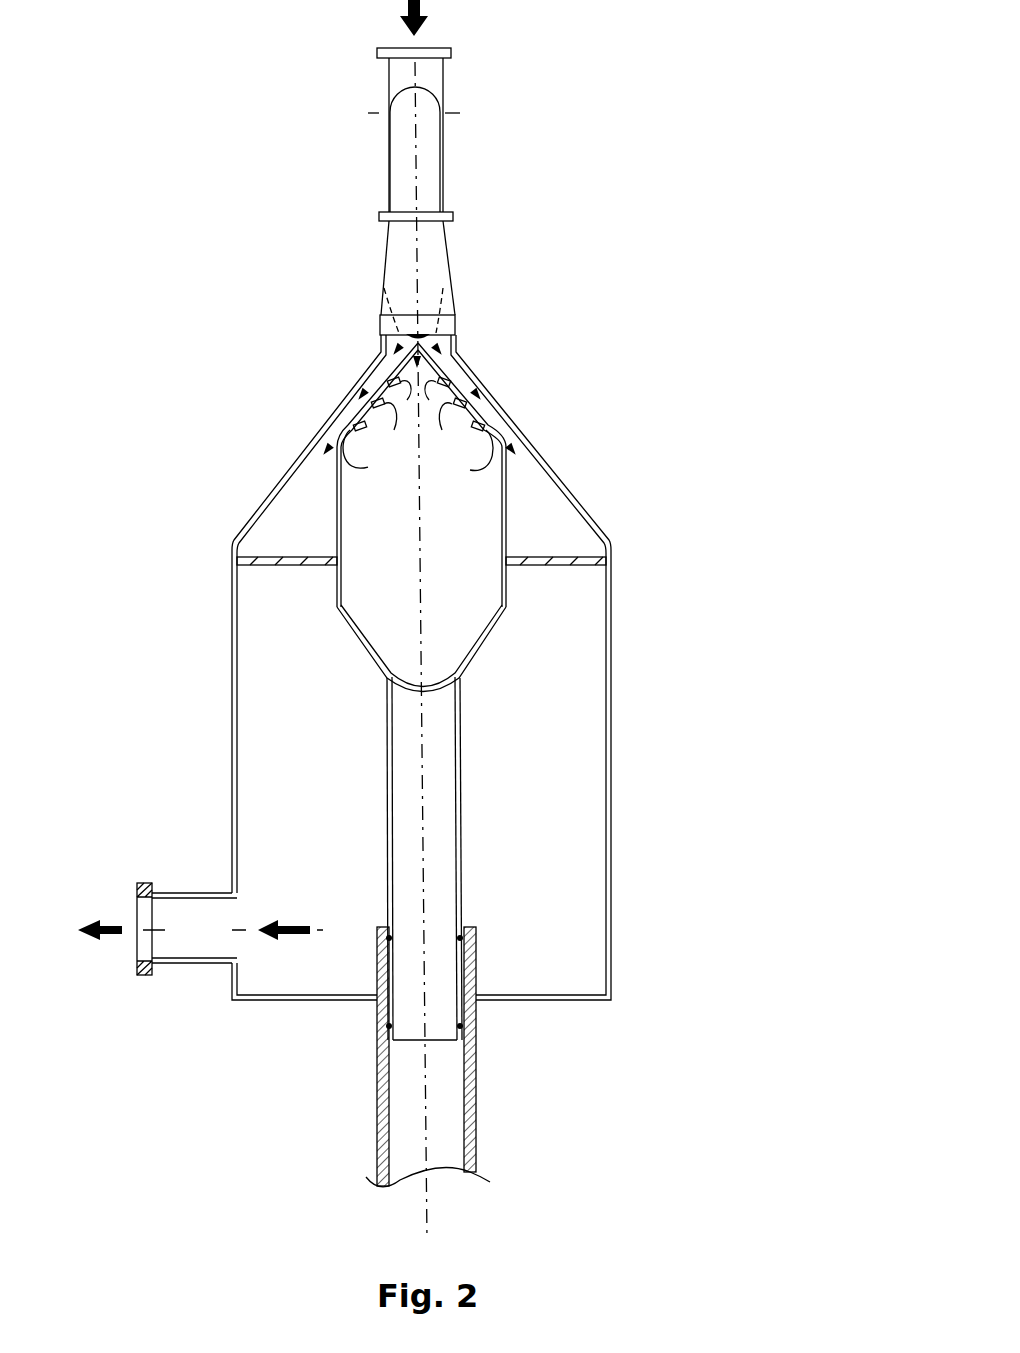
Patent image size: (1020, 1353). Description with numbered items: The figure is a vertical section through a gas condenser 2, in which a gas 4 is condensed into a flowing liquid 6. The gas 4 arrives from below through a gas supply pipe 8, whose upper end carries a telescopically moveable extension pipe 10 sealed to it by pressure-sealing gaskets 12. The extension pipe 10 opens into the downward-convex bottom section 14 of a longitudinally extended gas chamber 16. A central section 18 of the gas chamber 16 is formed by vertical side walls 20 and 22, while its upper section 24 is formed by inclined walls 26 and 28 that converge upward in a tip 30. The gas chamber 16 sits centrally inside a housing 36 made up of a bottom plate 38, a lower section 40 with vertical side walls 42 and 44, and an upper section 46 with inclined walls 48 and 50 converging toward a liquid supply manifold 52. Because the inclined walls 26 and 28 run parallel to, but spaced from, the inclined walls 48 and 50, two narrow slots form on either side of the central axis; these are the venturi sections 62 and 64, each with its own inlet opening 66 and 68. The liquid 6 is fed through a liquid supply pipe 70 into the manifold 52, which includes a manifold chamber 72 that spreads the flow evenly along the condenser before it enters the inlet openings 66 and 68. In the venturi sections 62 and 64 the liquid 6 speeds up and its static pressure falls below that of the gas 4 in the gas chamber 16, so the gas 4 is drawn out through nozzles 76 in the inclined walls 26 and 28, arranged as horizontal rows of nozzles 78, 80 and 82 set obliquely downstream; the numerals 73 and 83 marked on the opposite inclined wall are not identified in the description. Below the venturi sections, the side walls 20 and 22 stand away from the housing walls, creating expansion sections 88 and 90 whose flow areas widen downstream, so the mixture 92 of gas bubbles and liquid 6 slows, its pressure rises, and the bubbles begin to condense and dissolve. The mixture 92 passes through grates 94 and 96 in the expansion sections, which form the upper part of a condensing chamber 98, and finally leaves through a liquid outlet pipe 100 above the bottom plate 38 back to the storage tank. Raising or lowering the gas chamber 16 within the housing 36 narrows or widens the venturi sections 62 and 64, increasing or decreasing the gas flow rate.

The gas condenser 2 is at (703, 447).
The gas 4 is at (441, 577).
The liquid 6 is at (368, 372).
The gas supply pipe 8 is at (477, 1085).
The extension pipe 10 is at (462, 760).
The gaskets 12 is at (462, 945).
The bottom section 14 is at (467, 655).
The gas chamber 16 is at (340, 637).
The central section 18 is at (414, 507).
The vertical side wall 20 is at (338, 580).
The vertical side wall 22 is at (502, 583).
The upper section 24 is at (385, 290).
The inclined wall 26 is at (352, 475).
The inclined wall 28 is at (490, 475).
The tip 30 is at (443, 308).
The housing 36 is at (448, 667).
The bottom plate 38 is at (572, 1002).
The lower section 40 is at (413, 694).
The vertical side wall 42 is at (378, 914).
The vertical side wall 44 is at (612, 845).
The upper section 46 is at (305, 433).
The inclined wall 48 is at (263, 497).
The inclined wall 50 is at (582, 503).
The liquid supply manifold 52 is at (471, 134).
The venturi section 62 is at (347, 400).
The venturi section 64 is at (497, 402).
The inlet opening 66 is at (383, 340).
The inlet opening 68 is at (453, 357).
The liquid supply pipe 70 is at (430, 78).
The manifold chamber 72 is at (437, 272).
The right nozzle openings 73 is at (451, 404).
The nozzles 76 is at (388, 479).
The horizontal row of nozzles 78 is at (385, 404).
The horizontal row of nozzles 80 is at (375, 447).
The horizontal row of nozzles 82 is at (414, 459).
The right deflector tab 83 is at (455, 448).
The expansion section 88 is at (310, 487).
The expansion section 90 is at (530, 492).
The mixture 92 is at (283, 533).
The grate 94 is at (250, 568).
The grate 96 is at (583, 570).
The condensing chamber 98 is at (567, 910).
The liquid outlet pipe 100 is at (188, 968).